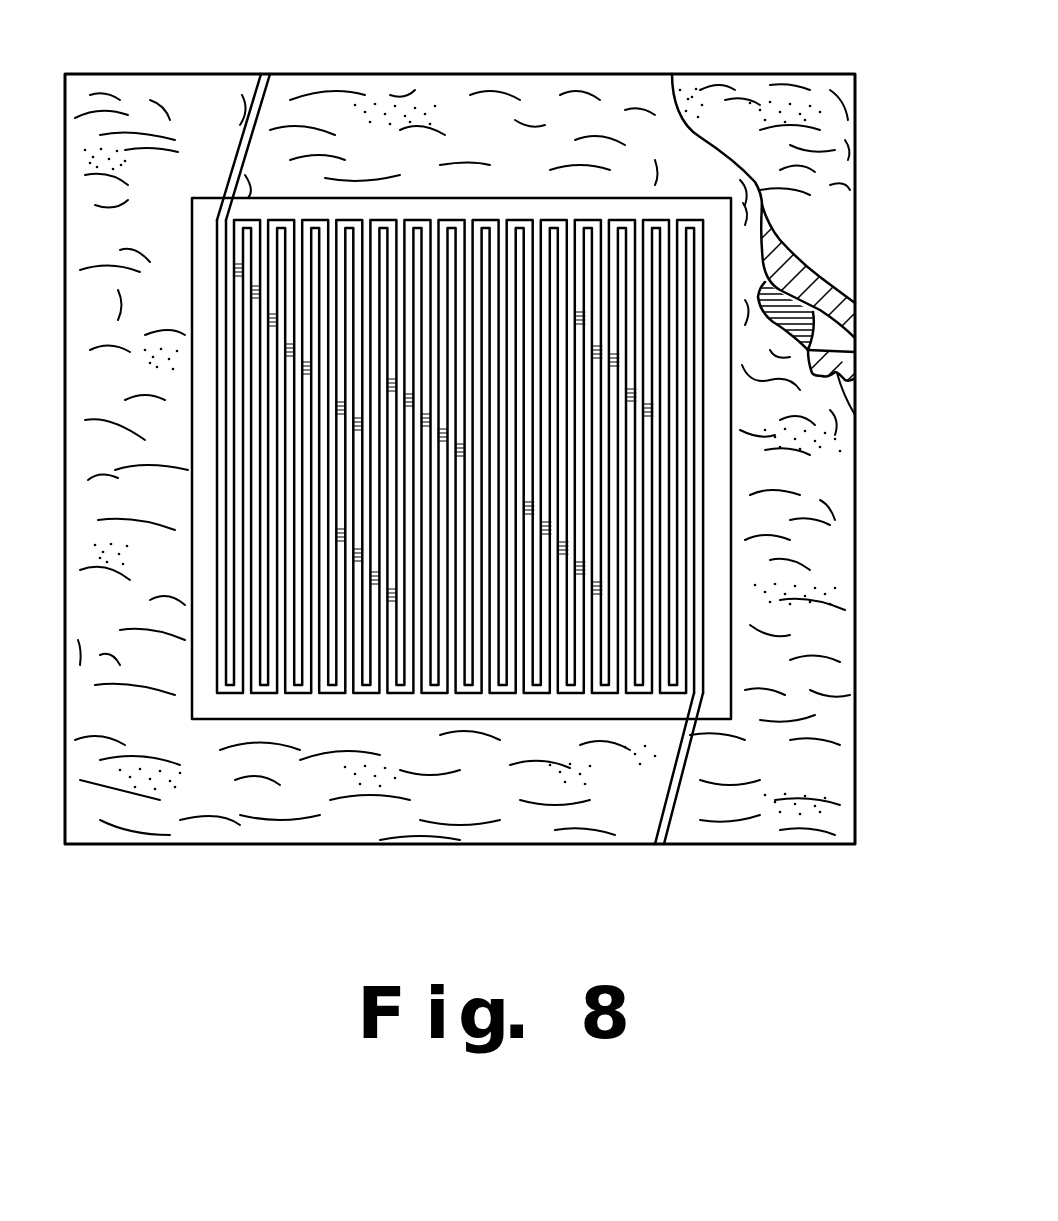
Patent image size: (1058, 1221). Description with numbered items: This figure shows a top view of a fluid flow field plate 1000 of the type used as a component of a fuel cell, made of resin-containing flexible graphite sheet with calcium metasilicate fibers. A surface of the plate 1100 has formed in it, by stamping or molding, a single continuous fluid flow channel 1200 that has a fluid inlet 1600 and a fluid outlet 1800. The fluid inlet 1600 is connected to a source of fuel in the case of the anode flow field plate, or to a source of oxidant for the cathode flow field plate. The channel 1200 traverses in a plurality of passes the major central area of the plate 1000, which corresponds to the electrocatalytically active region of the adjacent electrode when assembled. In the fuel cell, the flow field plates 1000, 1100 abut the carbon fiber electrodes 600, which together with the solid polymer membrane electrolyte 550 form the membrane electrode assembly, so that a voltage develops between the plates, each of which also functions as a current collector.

The fluid flow field plate 1000 is at (838, 760).
The oxidant flow field plate 1100 is at (823, 113).
The continuous fluid flow channel 1200 is at (623, 221).
The fluid inlet 1600 is at (263, 72).
The fluid outlet 1800 is at (660, 846).
The carbon fiber electrodes 600 is at (830, 288).
The solid polymer membrane electrolyte 550 is at (845, 343).